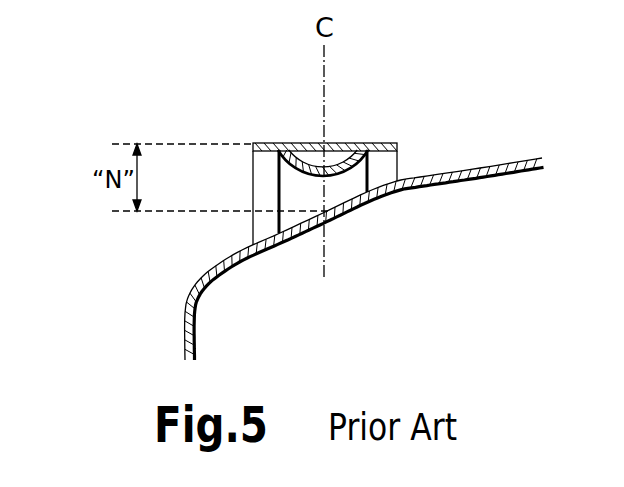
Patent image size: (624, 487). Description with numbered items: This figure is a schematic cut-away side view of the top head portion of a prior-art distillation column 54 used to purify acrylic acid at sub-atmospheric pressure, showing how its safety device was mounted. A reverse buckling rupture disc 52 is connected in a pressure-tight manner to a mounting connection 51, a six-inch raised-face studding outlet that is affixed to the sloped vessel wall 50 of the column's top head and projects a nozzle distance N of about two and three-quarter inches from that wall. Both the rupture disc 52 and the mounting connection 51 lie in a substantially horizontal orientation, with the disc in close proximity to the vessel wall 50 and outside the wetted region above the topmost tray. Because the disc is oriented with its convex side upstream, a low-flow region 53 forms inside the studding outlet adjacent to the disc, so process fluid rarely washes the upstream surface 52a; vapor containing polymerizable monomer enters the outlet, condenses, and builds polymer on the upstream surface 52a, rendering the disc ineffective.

The vessel wall 50 is at (470, 168).
The mounting connection 51 is at (264, 227).
The reverse buckling rupture disc 52 is at (347, 148).
The upstream surface 52a is at (308, 175).
The low-flow region 53 is at (347, 187).
The distillation column 54 is at (183, 331).